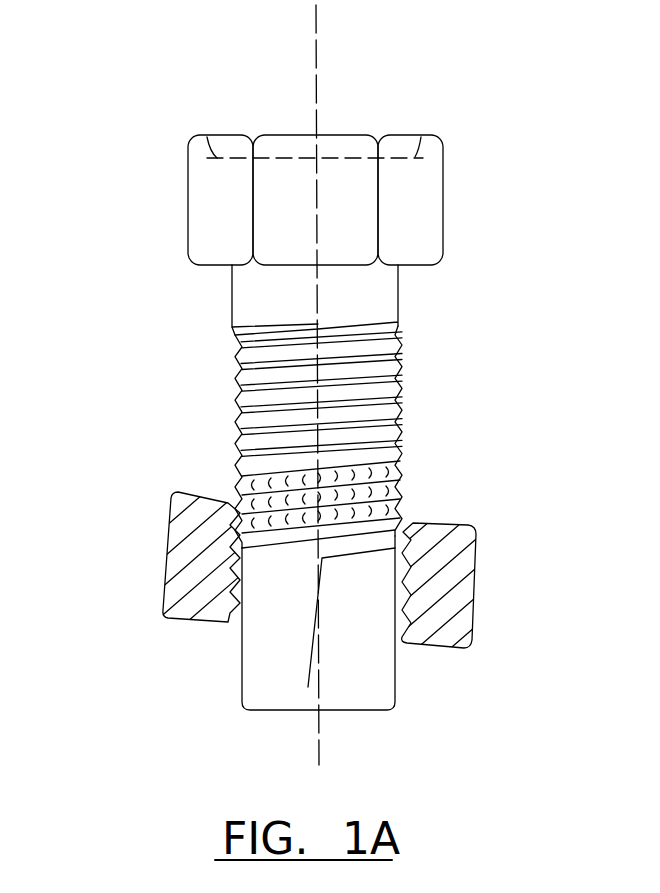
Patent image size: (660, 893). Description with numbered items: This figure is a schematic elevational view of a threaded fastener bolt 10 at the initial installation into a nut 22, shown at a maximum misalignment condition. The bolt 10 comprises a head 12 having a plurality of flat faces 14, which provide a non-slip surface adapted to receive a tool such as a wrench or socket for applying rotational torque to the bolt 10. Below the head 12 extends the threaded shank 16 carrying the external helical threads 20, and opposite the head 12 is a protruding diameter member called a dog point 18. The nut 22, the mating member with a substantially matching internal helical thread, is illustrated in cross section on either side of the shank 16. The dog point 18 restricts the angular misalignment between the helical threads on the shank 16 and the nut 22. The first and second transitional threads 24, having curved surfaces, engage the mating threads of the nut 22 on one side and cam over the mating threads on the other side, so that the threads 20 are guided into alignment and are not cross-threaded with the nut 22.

The threaded fastener bolt 10 is at (573, 288).
The head 12 is at (342, 135).
The flat faces 14 is at (232, 218).
The threaded shank 16 is at (232, 312).
The dog point 18 is at (380, 683).
The threads 20 is at (407, 390).
The nut 22 is at (477, 603).
The transitional threads 24 is at (408, 512).